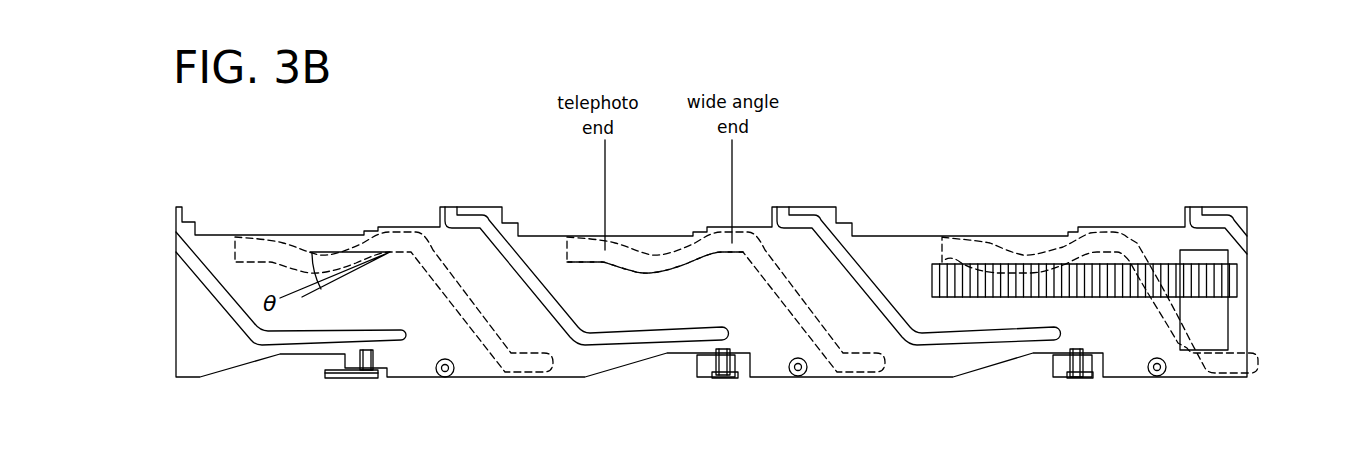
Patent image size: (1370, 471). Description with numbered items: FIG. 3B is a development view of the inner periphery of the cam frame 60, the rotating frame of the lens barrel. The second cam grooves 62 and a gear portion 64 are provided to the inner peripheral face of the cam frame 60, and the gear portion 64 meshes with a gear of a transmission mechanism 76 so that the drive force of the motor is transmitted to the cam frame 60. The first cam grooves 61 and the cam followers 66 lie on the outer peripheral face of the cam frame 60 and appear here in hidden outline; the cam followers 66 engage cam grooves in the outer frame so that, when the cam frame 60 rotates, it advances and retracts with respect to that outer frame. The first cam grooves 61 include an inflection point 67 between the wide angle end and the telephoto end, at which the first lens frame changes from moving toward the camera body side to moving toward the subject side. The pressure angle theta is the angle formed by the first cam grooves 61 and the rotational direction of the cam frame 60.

The cam frame 60 is at (343, 185).
The first cam grooves 61 is at (270, 252).
The second cam grooves 62 is at (488, 228).
The gear portion 64 is at (1235, 282).
The cam followers 66 is at (452, 371).
The inflection point 67 is at (649, 262).
The transmission mechanism 76 is at (1223, 317).